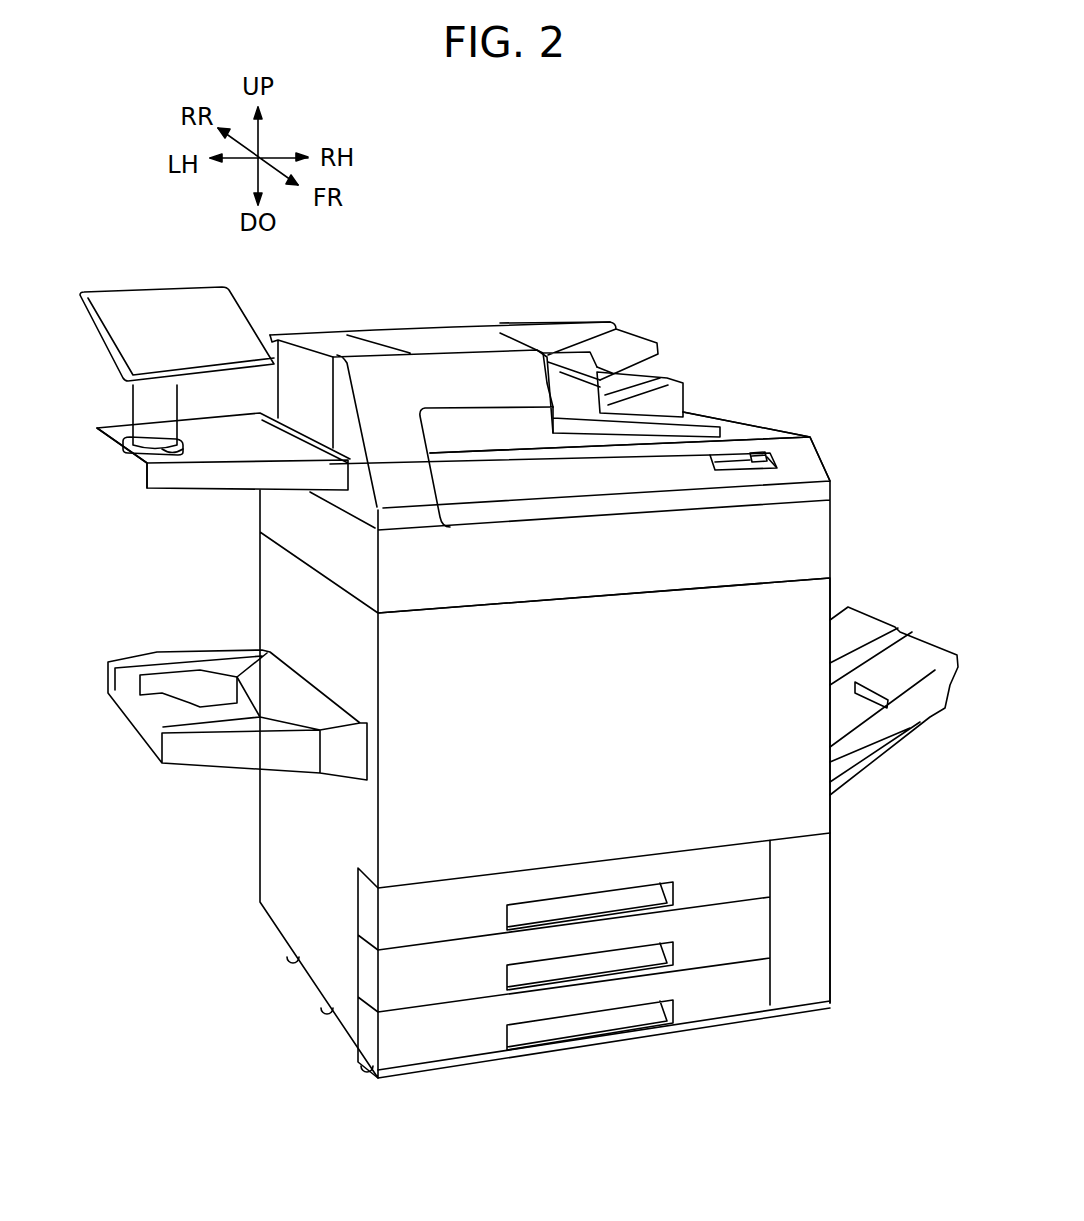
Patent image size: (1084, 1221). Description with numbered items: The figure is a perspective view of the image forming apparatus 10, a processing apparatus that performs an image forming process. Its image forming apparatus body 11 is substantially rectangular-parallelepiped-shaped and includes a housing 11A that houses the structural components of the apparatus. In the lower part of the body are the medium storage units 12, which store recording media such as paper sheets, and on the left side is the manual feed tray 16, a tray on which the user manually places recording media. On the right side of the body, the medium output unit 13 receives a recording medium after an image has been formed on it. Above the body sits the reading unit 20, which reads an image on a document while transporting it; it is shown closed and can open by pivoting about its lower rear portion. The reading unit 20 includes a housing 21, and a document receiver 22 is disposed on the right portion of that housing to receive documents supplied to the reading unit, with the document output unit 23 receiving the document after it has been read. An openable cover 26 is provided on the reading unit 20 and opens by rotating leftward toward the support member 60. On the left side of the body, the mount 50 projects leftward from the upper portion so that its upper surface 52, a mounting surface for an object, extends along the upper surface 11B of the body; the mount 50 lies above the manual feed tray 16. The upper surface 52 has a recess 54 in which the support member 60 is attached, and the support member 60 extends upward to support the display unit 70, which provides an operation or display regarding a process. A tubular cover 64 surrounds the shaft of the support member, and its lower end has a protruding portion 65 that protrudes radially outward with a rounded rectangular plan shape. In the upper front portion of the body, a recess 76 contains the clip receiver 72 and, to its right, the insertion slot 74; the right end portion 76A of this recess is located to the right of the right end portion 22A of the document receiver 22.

The image forming apparatus 10 is at (775, 232).
The image forming apparatus body 11 is at (839, 527).
The housing 11A is at (830, 588).
The upper surface 11B is at (728, 425).
The medium storage units 12 is at (356, 911).
The medium output unit 13 is at (925, 732).
The manual feed tray 16 is at (193, 783).
The reading unit 20 is at (441, 315).
The housing 21 is at (402, 328).
The document receiver 22 is at (624, 325).
The right end portion of the document receiver 22A is at (657, 350).
The document output unit 23 is at (667, 357).
The openable cover 26 is at (338, 330).
The mount 50 is at (229, 504).
The upper surface 52 is at (227, 443).
The recess 54 is at (175, 450).
The support member 60 is at (119, 406).
The cover 64 is at (132, 412).
The protruding portion 65 is at (137, 463).
The display unit 70 is at (76, 328).
The clip receiver 72 is at (733, 465).
The insertion slot 74 is at (753, 450).
The recess 76 is at (728, 465).
The right end portion of the recess 76A is at (777, 462).